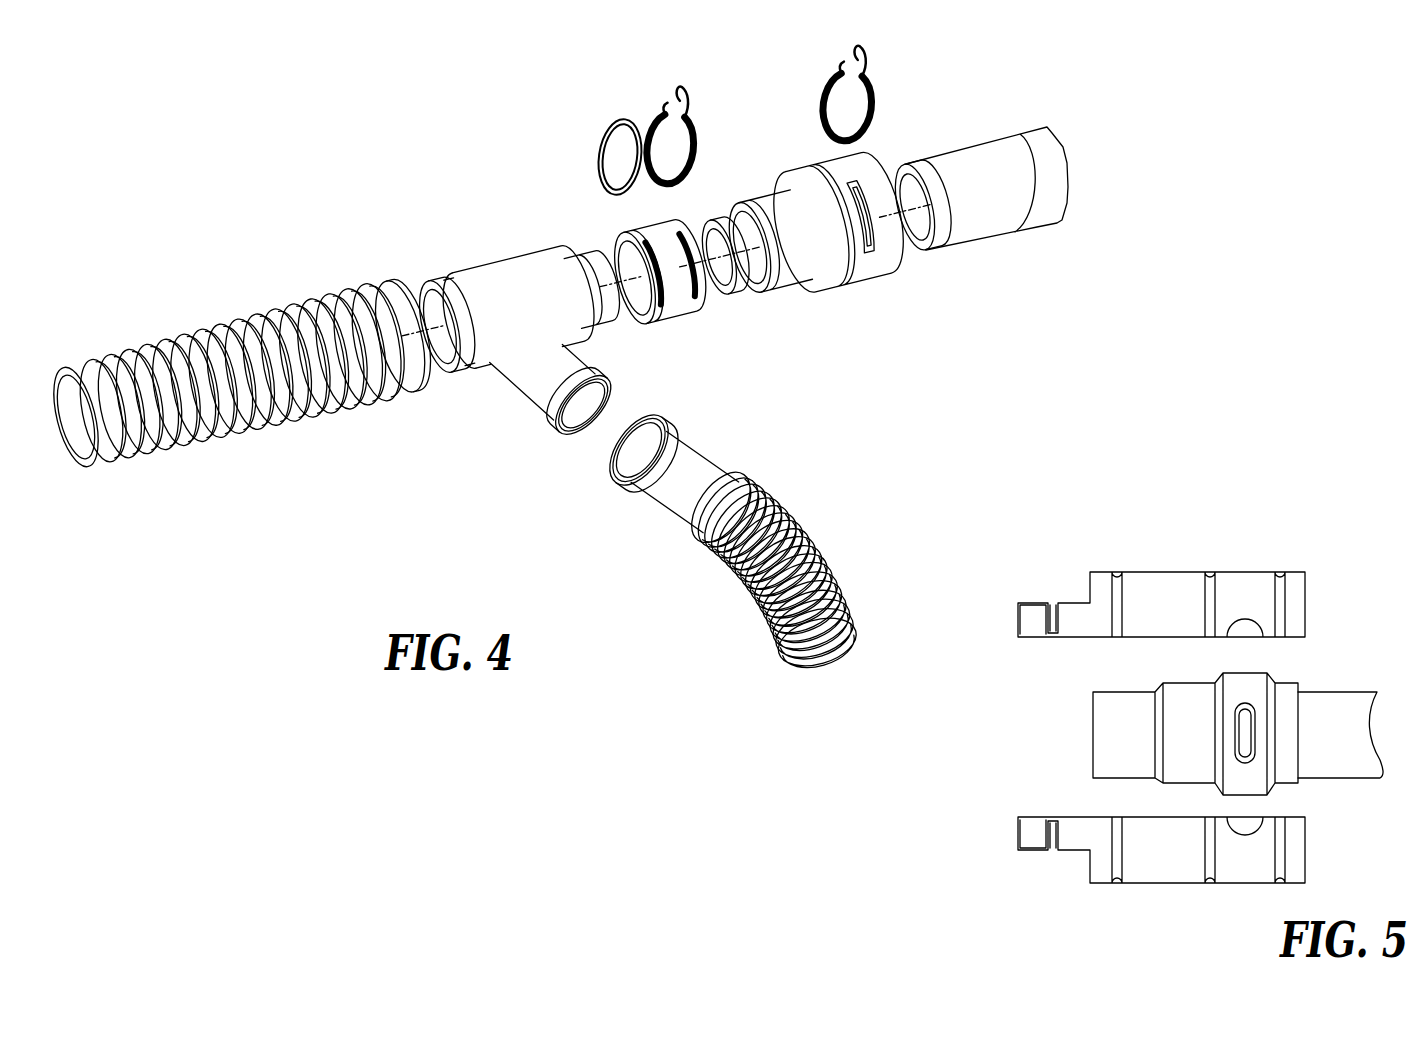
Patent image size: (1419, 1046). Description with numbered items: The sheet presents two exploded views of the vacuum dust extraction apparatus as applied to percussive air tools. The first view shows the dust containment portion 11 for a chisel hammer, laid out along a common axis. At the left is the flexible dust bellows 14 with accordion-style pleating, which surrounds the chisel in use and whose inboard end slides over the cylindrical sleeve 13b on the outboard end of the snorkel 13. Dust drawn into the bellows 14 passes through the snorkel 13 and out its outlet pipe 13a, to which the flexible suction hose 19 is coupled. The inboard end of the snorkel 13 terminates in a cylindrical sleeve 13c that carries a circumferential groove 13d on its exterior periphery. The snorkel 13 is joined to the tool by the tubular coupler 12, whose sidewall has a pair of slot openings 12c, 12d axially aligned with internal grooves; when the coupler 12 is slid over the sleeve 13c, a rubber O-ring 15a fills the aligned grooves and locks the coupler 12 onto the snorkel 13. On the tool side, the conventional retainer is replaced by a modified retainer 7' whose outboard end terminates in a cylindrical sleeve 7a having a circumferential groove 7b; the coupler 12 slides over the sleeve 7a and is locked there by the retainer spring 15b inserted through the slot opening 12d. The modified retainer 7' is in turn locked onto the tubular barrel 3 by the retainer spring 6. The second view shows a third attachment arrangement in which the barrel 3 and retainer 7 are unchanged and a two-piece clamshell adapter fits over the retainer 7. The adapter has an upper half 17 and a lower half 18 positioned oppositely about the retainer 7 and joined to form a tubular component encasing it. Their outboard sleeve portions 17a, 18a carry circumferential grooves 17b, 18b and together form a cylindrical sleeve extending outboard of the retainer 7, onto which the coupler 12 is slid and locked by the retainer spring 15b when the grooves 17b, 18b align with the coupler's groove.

In FIG. 4, the dust containment portion 11 is at (303, 207).
In FIG. 4, the dust bellows 14 is at (247, 430).
In FIG. 4, the snorkel 13 is at (495, 283).
In FIG. 4, the outlet pipe 13a is at (583, 422).
In FIG. 4, the cylindrical sleeve 13b is at (467, 373).
In FIG. 4, the cylindrical sleeve 13c is at (597, 333).
In FIG. 4, the circumferential groove 13d is at (586, 262).
In FIG. 4, the tubular coupler 12 is at (658, 235).
In FIG. 4, the slot opening 12c is at (666, 295).
In FIG. 4, the slot opening 12d is at (700, 303).
In FIG. 4, the O-ring 15a is at (600, 165).
In FIG. 4, the retainer spring 15b is at (695, 137).
In FIG. 4, the circumferential groove 7b is at (727, 213).
In FIG. 4, the cylindrical sleeve 7a is at (740, 280).
In FIG. 4, the modified retainer 7' is at (838, 240).
In FIG. 4, the retainer spring 6 is at (873, 103).
In FIG. 4, the tubular barrel 3 is at (988, 243).
In FIG. 5, the tubular barrel 3 is at (1337, 713).
In FIG. 4, the flexible suction hose 19 is at (737, 477).
In FIG. 5, the upper half 17 is at (1160, 580).
In FIG. 5, the outboard sleeve portion 17a is at (1033, 610).
In FIG. 5, the circumferential groove 17b is at (1053, 623).
In FIG. 5, the retainer 7 is at (1206, 718).
In FIG. 5, the lower half 18 is at (1160, 873).
In FIG. 5, the outboard sleeve portion 18a is at (1032, 847).
In FIG. 5, the circumferential groove 18b is at (1050, 840).